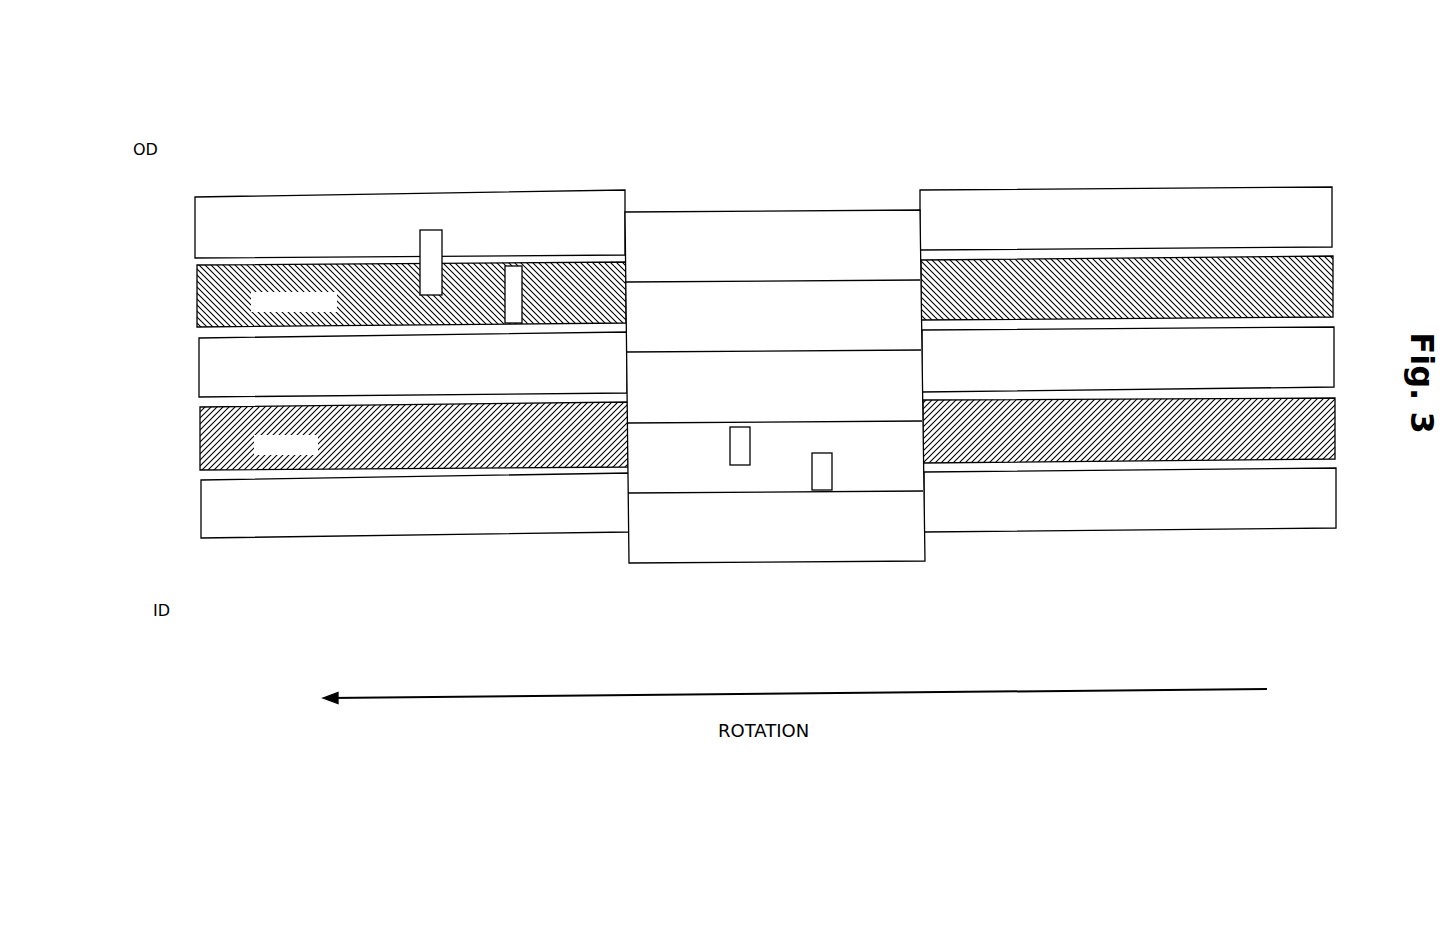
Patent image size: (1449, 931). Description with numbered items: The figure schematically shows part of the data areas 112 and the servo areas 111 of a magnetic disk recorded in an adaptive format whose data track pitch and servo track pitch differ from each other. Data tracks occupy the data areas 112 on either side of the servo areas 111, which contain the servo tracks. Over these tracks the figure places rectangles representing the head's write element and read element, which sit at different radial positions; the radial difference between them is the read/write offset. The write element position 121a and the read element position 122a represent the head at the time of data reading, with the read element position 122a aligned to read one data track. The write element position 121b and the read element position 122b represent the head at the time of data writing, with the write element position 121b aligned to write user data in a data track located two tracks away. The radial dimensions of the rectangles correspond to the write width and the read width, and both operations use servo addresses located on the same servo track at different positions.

The servo areas 111 is at (767, 175).
The data areas 112 is at (380, 178).
The write element position 121a is at (426, 230).
The write element position 121b is at (508, 266).
The read element position 122a is at (741, 465).
The read element position 122b is at (822, 490).